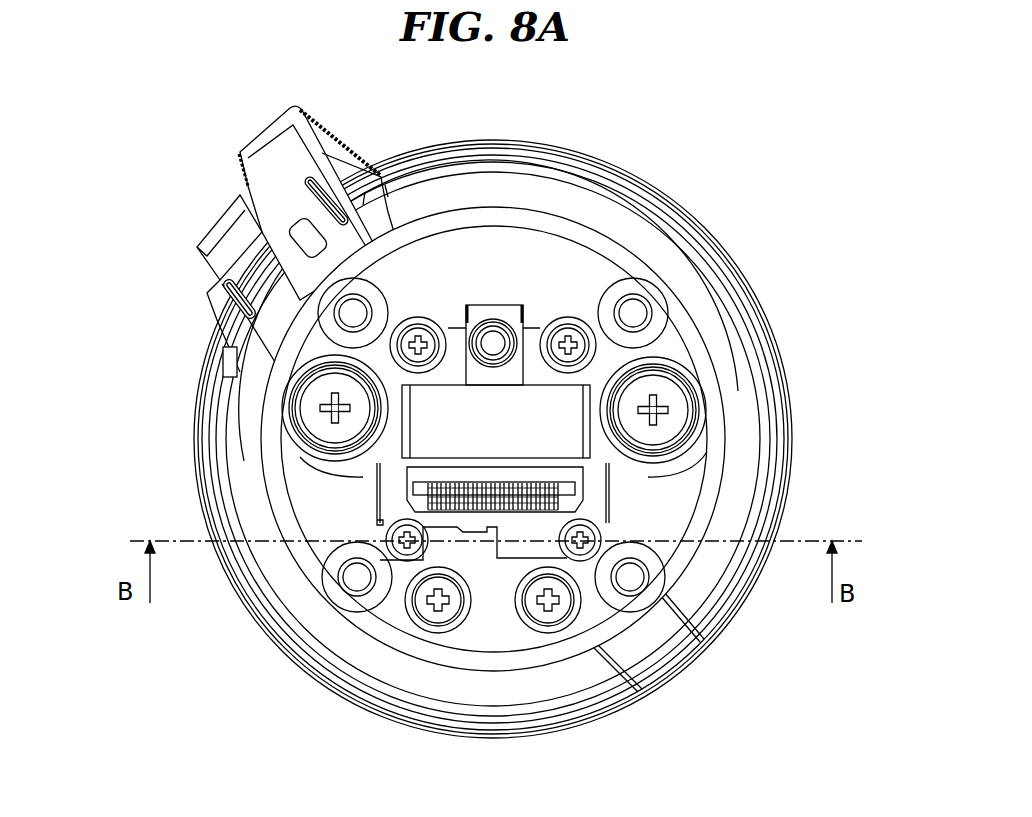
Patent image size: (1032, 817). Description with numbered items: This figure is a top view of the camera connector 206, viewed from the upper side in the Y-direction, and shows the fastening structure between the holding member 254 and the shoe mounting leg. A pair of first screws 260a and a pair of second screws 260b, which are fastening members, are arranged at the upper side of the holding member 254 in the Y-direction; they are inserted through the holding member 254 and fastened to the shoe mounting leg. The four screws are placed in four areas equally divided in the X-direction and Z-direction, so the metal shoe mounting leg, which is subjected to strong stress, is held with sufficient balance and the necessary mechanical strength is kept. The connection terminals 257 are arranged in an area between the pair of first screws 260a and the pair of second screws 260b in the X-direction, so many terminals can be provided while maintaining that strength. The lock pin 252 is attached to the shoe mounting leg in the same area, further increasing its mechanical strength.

The camera connector 206 is at (201, 194).
The lock pin 252 is at (496, 332).
The holding member 254 is at (517, 398).
The connection terminals 257 is at (562, 493).
The first screws 260a is at (397, 533).
The second screws 260b is at (590, 535).